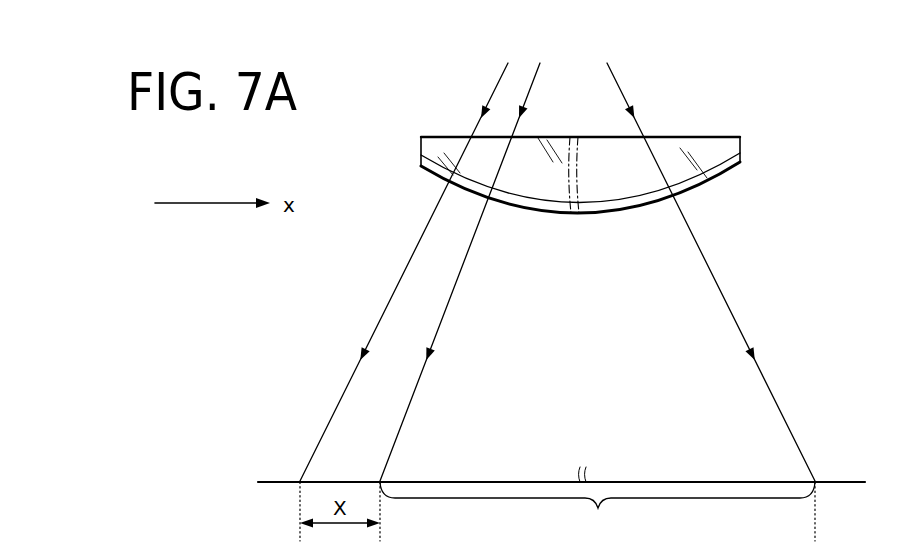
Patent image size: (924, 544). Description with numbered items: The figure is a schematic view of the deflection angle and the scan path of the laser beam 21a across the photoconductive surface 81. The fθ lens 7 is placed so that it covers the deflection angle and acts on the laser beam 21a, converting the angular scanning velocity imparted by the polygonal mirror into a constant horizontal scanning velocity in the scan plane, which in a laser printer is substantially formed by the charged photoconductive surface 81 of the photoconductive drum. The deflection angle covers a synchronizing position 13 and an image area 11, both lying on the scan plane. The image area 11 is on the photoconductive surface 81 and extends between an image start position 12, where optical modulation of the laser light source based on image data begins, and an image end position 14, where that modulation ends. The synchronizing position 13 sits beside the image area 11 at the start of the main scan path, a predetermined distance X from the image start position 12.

The fθ lens 7 is at (443, 141).
The laser beam 21a is at (532, 82).
The photoconductive surface 81 is at (689, 474).
The synchronizing position 13 is at (300, 479).
The image start position 12 is at (380, 479).
The image end position 14 is at (816, 479).
The image area 11 is at (597, 511).